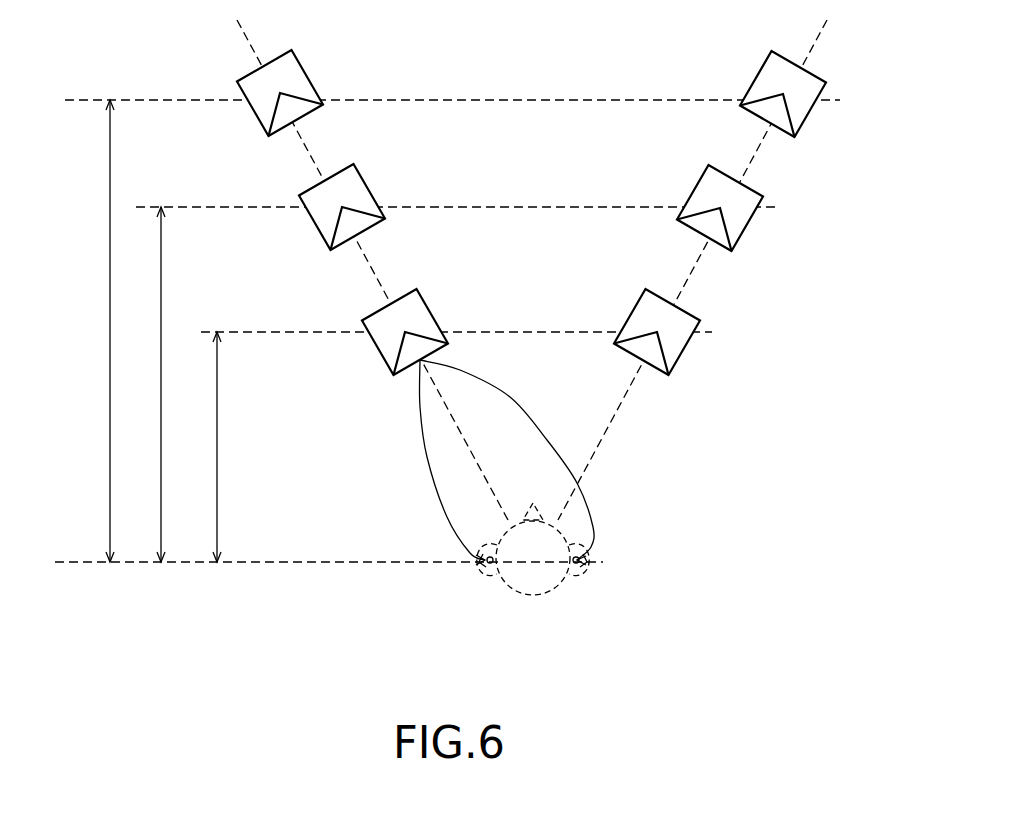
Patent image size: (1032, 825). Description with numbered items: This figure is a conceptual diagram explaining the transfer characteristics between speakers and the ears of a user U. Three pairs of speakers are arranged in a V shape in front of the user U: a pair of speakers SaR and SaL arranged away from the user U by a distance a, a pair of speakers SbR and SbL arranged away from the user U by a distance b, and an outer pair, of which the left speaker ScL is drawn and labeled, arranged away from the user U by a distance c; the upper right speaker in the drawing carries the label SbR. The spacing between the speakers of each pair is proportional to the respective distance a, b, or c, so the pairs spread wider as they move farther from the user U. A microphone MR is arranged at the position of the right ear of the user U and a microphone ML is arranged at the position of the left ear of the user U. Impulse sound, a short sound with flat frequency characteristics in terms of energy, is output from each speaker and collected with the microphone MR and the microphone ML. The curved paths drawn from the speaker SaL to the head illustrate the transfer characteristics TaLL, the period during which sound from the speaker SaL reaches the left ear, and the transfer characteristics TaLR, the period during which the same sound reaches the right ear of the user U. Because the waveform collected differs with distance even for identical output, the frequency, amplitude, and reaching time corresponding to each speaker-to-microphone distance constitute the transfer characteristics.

The speaker ScL is at (255, 118).
The speaker SbL is at (320, 233).
The speaker SaL is at (386, 362).
The speaker SbR is at (809, 121).
The speaker SaR is at (682, 358).
The transfer characteristics TaLL is at (427, 462).
The transfer characteristics TaLR is at (507, 462).
The microphone ML is at (487, 577).
The microphone MR is at (575, 577).
The user U is at (530, 580).
The distance a is at (206, 447).
The distance b is at (149, 384).
The distance c is at (98, 331).